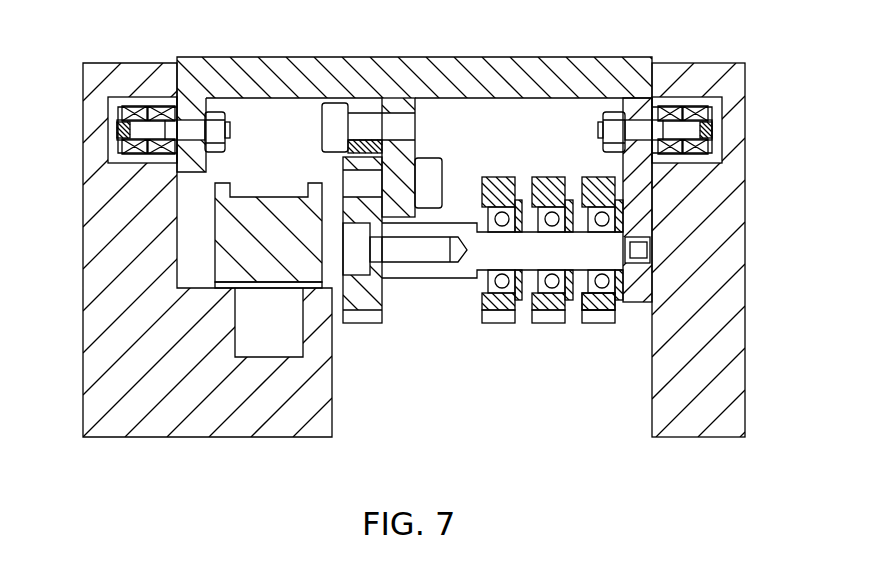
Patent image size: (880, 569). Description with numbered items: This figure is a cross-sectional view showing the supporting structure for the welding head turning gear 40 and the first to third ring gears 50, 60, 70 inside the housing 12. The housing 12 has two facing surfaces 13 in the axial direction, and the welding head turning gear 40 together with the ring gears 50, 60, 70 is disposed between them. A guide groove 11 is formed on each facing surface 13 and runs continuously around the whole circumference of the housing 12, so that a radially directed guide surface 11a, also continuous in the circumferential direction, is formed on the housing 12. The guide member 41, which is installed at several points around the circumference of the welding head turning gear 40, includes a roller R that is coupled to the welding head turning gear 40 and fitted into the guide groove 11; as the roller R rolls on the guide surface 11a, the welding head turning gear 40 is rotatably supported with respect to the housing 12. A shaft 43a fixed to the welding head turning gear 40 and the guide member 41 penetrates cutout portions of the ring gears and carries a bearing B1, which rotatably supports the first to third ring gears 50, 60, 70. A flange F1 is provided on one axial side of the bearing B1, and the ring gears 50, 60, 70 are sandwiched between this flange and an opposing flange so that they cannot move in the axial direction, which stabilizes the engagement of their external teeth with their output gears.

The guide groove 11 is at (108, 113).
The guide surface 11a is at (148, 106).
The roller R is at (145, 130).
The housing 12 is at (95, 293).
The facing surface 13 is at (182, 236).
The guide member 41 is at (402, 68).
The welding head turning gear 40 is at (372, 305).
The shaft 43a is at (610, 250).
The first ring gear 50 is at (496, 297).
The second ring gear 60 is at (548, 297).
The third ring gear 70 is at (598, 297).
The flange F1 is at (618, 203).
The bearing B1 is at (604, 294).